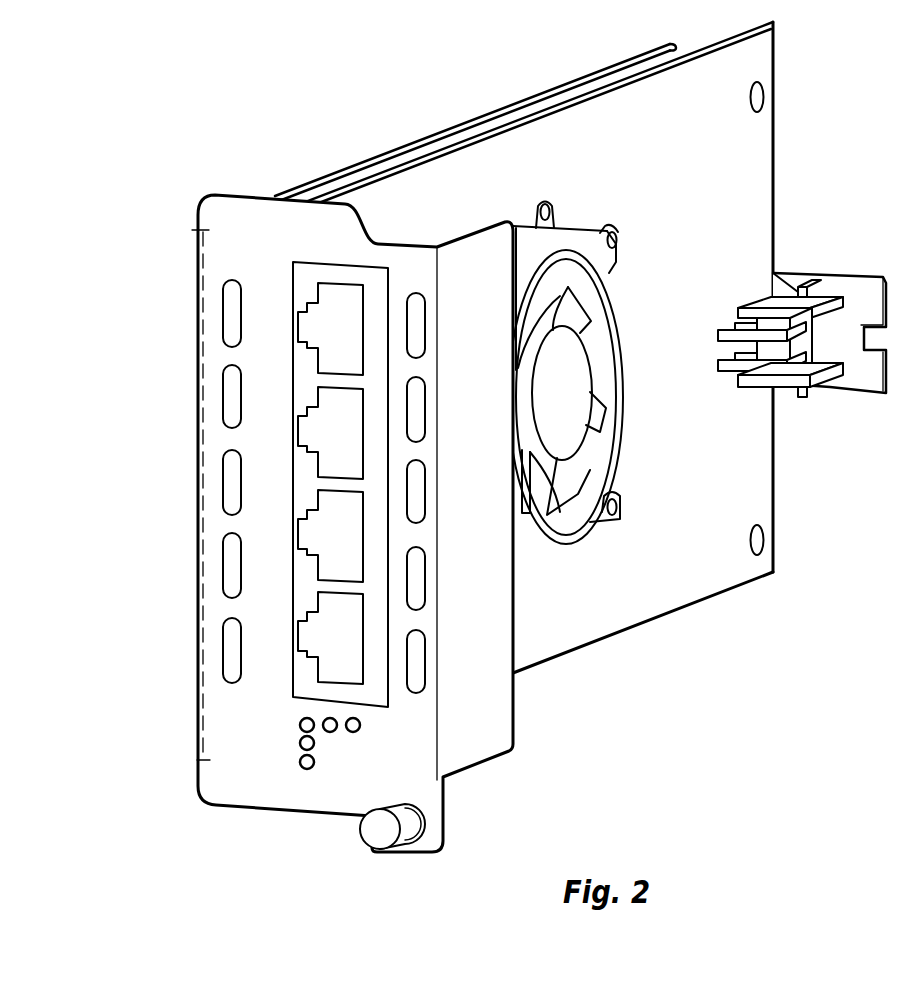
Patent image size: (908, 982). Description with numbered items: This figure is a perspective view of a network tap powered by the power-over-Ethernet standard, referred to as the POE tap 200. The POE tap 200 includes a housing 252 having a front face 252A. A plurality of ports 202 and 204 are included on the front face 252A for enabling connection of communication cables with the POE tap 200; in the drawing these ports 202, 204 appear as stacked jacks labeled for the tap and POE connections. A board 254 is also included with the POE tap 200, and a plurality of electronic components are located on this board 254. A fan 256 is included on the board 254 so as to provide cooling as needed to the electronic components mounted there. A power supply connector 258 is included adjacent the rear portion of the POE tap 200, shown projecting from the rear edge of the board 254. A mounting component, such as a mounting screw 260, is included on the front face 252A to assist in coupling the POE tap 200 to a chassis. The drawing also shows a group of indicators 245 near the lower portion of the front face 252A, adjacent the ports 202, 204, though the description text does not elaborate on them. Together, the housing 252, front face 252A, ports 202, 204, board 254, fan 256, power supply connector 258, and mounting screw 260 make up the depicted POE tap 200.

The POE tap 200 is at (483, 459).
The ports 202 is at (317, 568).
The ports 204 is at (317, 360).
The status indicator LEDs 245 is at (378, 725).
The housing 252 is at (547, 102).
The front face 252A is at (211, 642).
The board 254 is at (712, 249).
The fan 256 is at (626, 407).
The power supply connector 258 is at (777, 305).
The mounting screw 260 is at (373, 843).